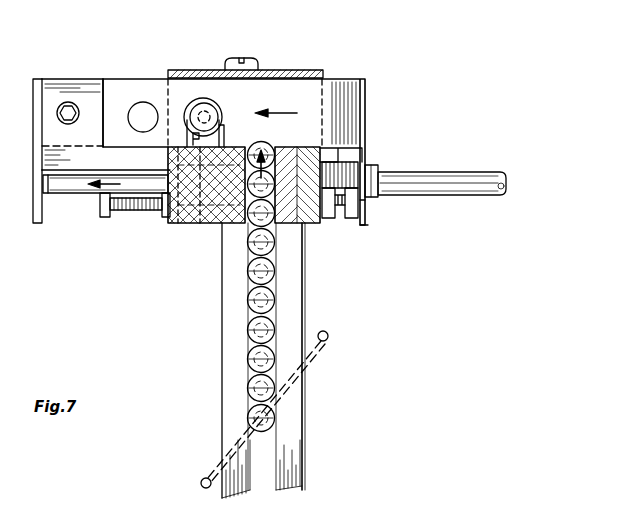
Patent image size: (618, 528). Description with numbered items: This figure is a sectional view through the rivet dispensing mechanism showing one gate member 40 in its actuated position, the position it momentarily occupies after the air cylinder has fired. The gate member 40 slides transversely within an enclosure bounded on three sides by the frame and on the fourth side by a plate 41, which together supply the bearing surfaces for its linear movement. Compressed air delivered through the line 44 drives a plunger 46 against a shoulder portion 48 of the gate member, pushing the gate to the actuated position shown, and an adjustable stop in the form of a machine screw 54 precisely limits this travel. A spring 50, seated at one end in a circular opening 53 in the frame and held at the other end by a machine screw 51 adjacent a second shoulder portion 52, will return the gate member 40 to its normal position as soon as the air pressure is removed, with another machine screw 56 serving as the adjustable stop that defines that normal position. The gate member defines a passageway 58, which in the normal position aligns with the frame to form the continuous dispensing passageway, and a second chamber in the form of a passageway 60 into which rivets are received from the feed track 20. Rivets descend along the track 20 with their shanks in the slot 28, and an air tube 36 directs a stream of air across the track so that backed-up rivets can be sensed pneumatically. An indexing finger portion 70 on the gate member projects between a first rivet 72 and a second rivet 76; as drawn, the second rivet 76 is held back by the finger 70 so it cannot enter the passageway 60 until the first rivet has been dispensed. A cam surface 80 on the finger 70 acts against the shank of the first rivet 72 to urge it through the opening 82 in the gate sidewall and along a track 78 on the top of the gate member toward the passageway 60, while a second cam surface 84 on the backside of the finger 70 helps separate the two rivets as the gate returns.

The track 20 is at (300, 302).
The slot 28 is at (265, 463).
The air tube 36 is at (322, 355).
The gate member 40 is at (367, 97).
The plate 41 is at (203, 70).
The line 44 is at (455, 172).
The plunger 46 is at (60, 190).
The shoulder portion 48 is at (33, 178).
The spring 50 is at (350, 163).
The machine screw 51 is at (385, 196).
The second shoulder portion 52 is at (367, 222).
The circular opening 53 is at (350, 140).
The machine screw 54 is at (355, 220).
The machine screw 56 is at (104, 218).
The passageway 58 is at (140, 108).
The passageway 60 is at (212, 100).
The finger portion 70 is at (175, 224).
The first rivet 72 is at (263, 150).
The second rivet 76 is at (300, 150).
The track 78 is at (220, 138).
The cam surface 80 is at (213, 224).
The opening 82 is at (185, 145).
The second cam surface 84 is at (190, 224).